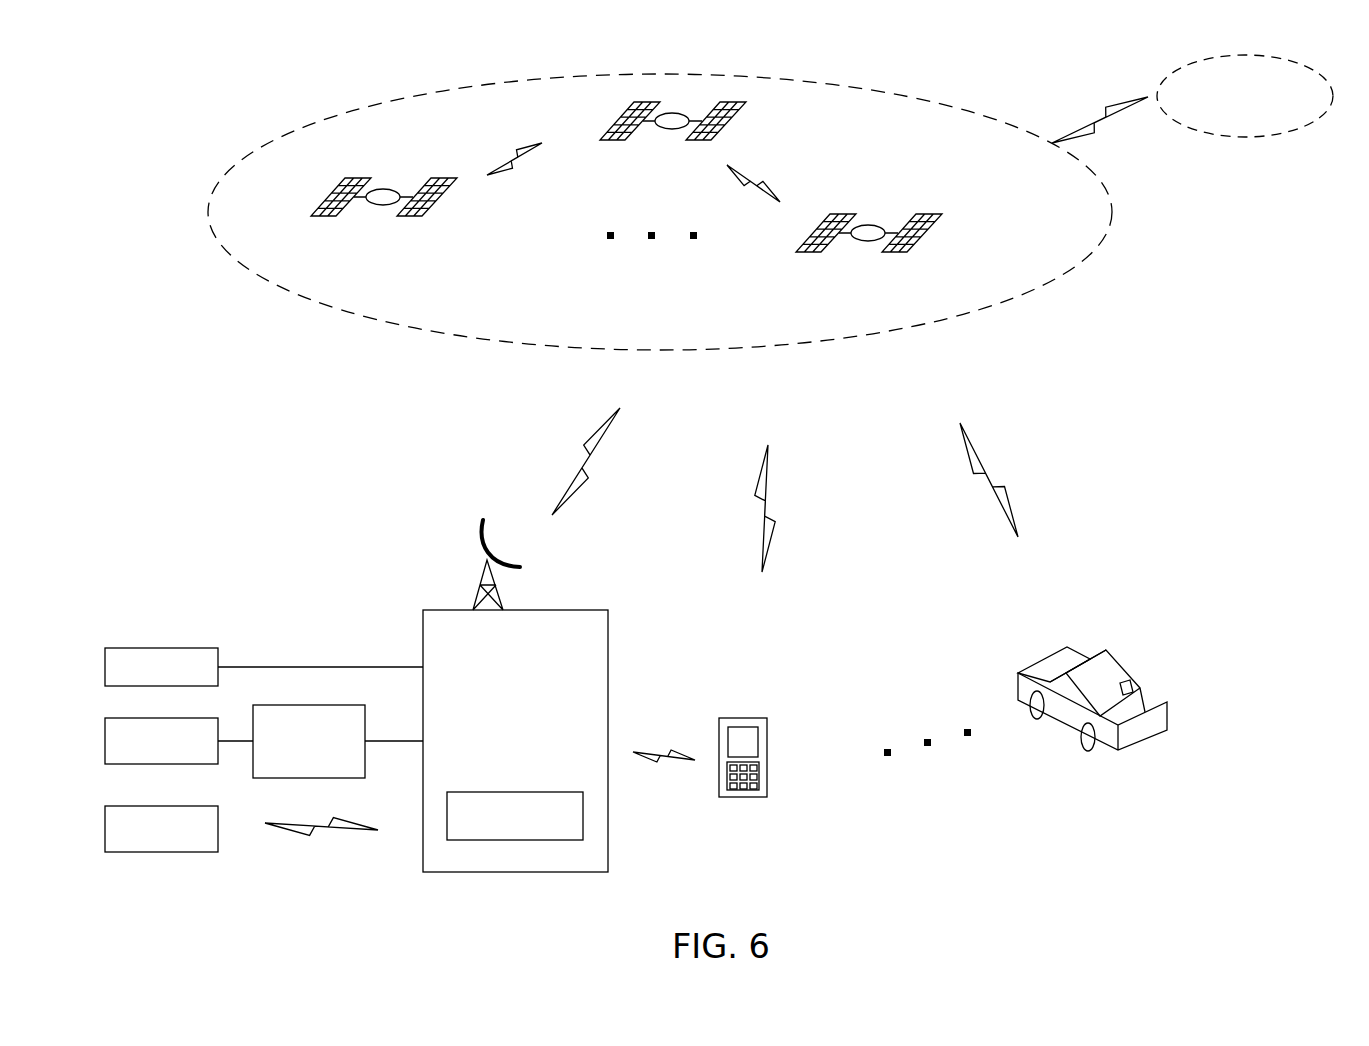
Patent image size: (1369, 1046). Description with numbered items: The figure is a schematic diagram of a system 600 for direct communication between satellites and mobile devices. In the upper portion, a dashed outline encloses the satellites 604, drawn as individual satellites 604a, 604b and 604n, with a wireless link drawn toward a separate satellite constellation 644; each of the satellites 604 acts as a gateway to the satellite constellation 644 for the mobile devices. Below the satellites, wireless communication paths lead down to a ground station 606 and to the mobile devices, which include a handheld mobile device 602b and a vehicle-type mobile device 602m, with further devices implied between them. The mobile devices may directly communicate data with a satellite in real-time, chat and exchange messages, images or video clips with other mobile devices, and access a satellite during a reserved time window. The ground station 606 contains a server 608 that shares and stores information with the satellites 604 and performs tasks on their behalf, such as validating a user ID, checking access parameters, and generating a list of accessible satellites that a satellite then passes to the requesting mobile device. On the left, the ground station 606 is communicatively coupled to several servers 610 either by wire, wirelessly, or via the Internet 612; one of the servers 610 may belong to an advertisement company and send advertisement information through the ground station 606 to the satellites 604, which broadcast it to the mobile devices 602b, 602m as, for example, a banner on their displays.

The system 600 is at (701, 456).
The satellites 604 is at (933, 105).
The satellite 604a is at (430, 207).
The satellite 604b is at (719, 131).
The satellite 604n is at (915, 243).
The satellite constellation 644 is at (1168, 77).
The servers 610 is at (86, 620).
The Internet 612 is at (309, 741).
The ground station 606 is at (515, 696).
The server 608 is at (515, 816).
The mobile device 602b is at (745, 719).
The mobile device 602m is at (1118, 665).